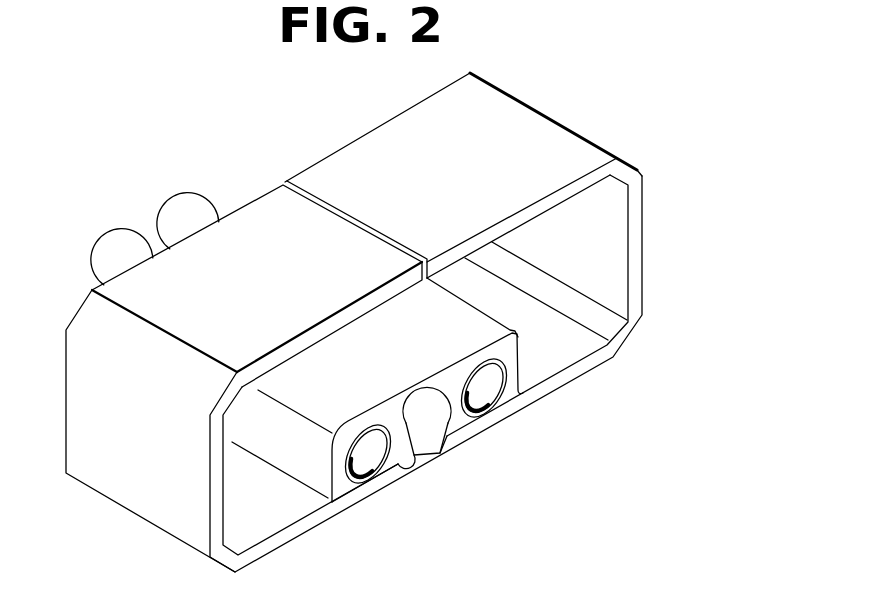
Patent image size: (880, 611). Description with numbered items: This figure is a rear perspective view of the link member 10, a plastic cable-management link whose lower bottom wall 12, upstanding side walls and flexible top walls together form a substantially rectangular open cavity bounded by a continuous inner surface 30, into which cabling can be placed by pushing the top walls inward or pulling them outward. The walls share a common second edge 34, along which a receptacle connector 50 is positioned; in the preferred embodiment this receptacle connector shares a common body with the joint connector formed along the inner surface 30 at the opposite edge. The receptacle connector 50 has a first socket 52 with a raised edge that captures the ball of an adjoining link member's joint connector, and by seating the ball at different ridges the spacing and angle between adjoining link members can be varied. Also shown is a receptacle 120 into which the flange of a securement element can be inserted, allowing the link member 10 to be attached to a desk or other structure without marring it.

The link member 10 is at (712, 127).
The lower bottom wall 12 is at (293, 533).
The continuous inner surface 30 is at (590, 233).
The common second edge 34 is at (253, 193).
The receptacle connector 50 is at (502, 350).
The first socket 52 is at (380, 470).
The receptacle 120 is at (423, 453).